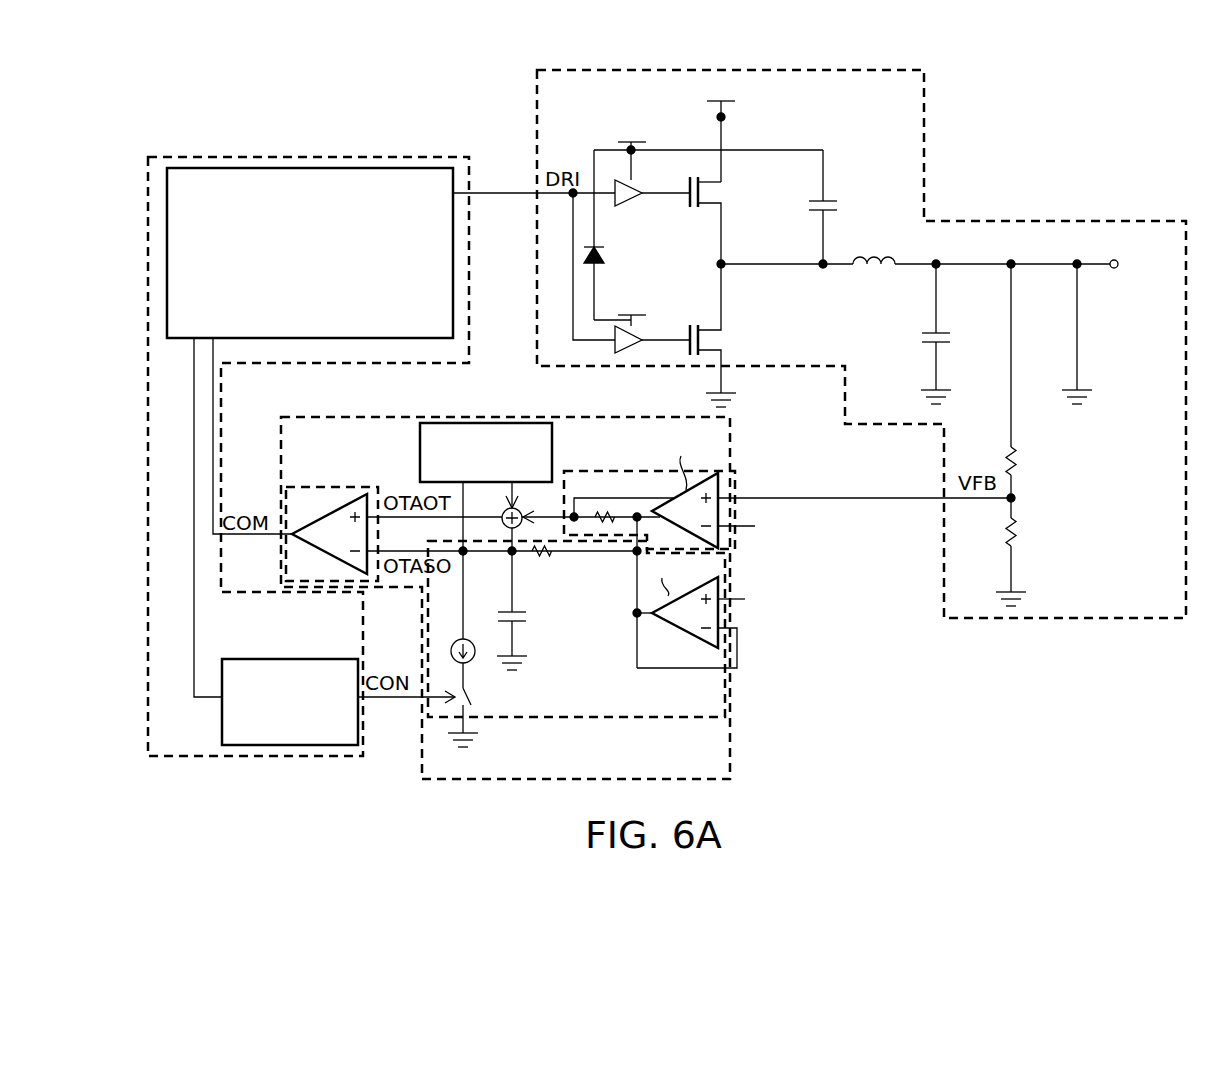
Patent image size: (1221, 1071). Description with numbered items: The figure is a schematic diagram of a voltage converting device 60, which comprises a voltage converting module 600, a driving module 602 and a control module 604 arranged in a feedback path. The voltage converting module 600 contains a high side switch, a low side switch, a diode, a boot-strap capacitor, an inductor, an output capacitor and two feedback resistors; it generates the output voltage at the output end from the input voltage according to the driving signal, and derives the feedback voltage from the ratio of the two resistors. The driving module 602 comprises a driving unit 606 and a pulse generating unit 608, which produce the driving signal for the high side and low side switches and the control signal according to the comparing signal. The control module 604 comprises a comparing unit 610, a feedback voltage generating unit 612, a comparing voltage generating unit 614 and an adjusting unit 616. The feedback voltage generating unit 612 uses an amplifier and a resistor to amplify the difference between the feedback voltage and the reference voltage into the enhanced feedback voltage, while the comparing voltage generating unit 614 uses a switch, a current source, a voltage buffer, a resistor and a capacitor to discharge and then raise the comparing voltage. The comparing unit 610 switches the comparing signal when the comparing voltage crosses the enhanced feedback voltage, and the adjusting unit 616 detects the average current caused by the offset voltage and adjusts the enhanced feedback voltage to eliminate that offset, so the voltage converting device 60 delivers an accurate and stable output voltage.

The voltage converting device 60 is at (1122, 132).
The voltage converting module 600 is at (1000, 220).
The driving module 602 is at (356, 156).
The control module 604 is at (484, 782).
The driving unit 606 is at (292, 167).
The pulse generating unit 608 is at (288, 658).
The comparing unit 610 is at (314, 486).
The feedback voltage generating unit 612 is at (738, 490).
The comparing voltage generating unit 614 is at (530, 719).
The adjusting unit 616 is at (553, 450).